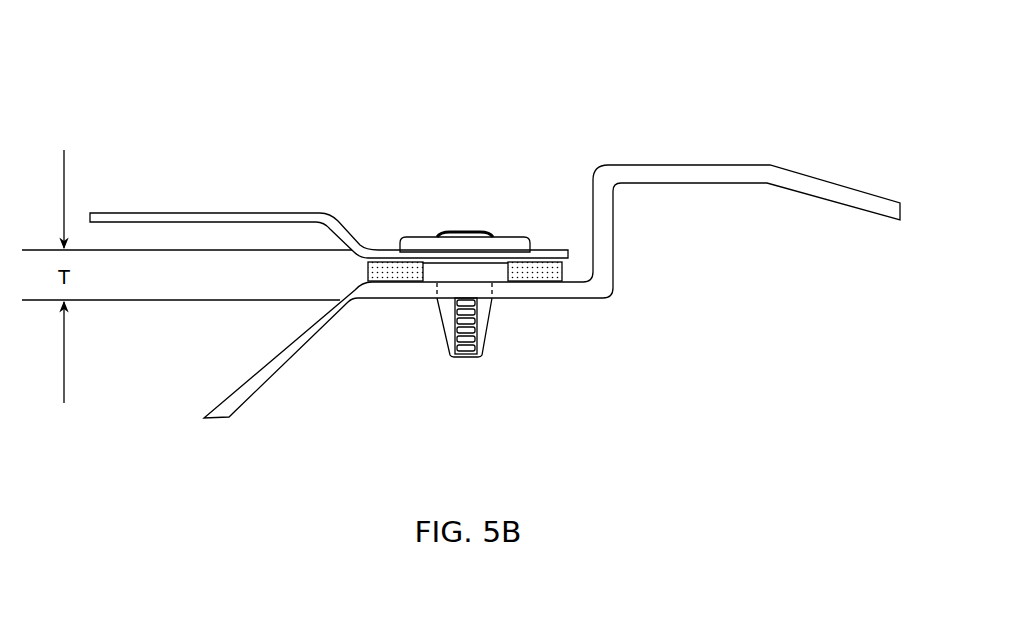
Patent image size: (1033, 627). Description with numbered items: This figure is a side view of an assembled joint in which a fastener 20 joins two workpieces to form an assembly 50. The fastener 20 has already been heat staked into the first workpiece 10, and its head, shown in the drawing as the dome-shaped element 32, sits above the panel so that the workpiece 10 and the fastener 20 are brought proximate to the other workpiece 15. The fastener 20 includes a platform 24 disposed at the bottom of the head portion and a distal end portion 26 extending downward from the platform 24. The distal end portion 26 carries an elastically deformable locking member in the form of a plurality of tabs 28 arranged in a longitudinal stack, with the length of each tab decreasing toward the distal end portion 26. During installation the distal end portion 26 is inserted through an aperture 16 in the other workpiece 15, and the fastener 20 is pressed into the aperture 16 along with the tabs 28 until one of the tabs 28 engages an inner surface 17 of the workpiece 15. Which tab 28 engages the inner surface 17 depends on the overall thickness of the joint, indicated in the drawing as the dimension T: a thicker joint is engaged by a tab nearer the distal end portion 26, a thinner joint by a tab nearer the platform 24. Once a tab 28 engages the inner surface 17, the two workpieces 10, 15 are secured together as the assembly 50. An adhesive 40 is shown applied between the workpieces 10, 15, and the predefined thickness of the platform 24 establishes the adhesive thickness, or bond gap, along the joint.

The assembly 50 is at (584, 86).
The workpiece 10 is at (243, 215).
The fastener 20 is at (510, 216).
The head / cap 32 is at (420, 237).
The adhesive 40 is at (385, 273).
The aperture 16 is at (474, 290).
The tabs 28 is at (473, 327).
The workpiece 15 is at (605, 222).
The platform 24 is at (585, 281).
The inner surface 17 is at (573, 300).
The distal end portion 26 is at (417, 349).